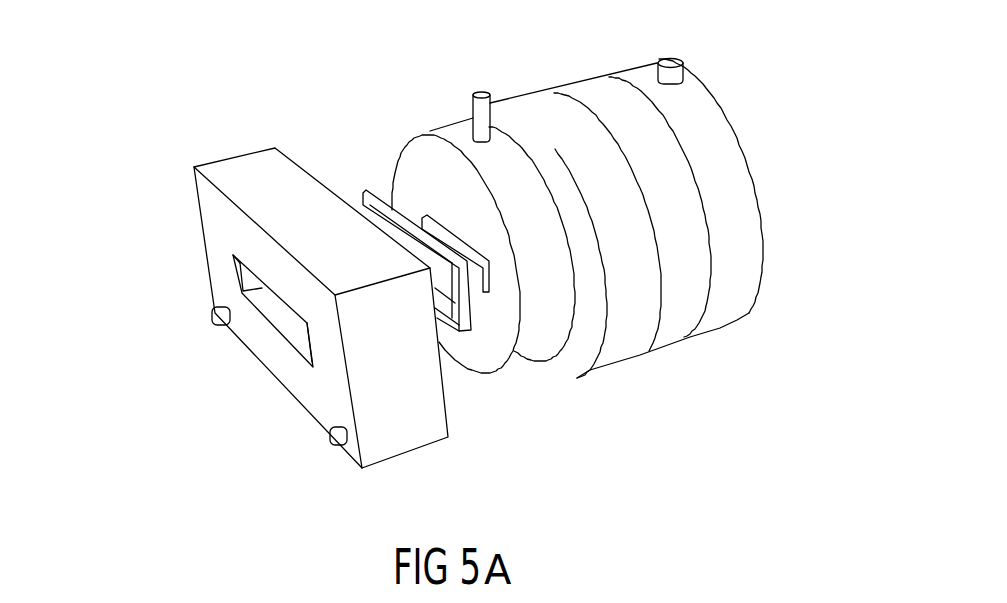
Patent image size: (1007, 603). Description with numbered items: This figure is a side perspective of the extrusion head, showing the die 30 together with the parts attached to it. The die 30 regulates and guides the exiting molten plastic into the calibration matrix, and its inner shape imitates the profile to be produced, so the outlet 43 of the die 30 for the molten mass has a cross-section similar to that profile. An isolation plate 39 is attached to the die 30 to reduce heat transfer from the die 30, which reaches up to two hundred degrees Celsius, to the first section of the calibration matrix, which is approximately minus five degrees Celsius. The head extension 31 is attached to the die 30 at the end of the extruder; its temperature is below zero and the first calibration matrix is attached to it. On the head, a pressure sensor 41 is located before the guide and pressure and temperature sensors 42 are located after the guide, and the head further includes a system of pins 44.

The die 30 is at (420, 160).
The head extension 31 is at (245, 332).
The isolation plate 39 is at (462, 329).
The pressure sensor 41 is at (678, 72).
The pressure and temperature sensors 42 is at (478, 103).
The outlet 43 is at (487, 278).
The system of pins 44 is at (328, 433).